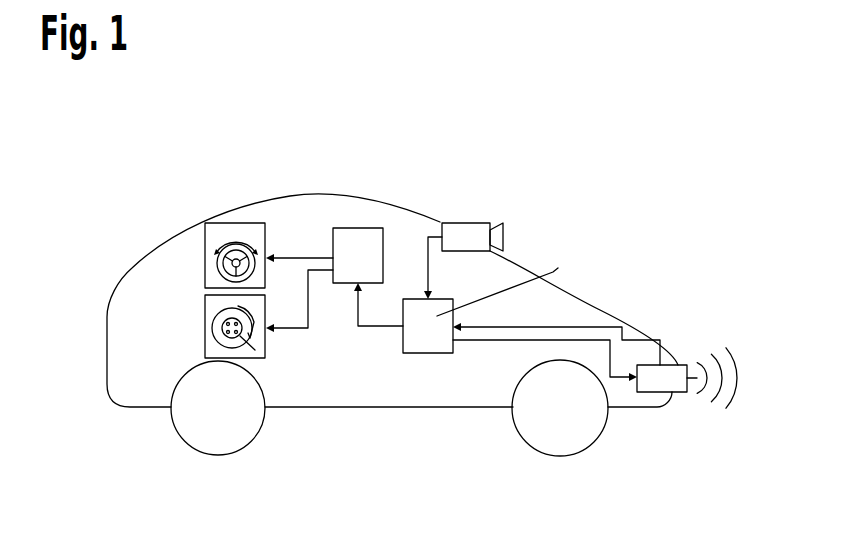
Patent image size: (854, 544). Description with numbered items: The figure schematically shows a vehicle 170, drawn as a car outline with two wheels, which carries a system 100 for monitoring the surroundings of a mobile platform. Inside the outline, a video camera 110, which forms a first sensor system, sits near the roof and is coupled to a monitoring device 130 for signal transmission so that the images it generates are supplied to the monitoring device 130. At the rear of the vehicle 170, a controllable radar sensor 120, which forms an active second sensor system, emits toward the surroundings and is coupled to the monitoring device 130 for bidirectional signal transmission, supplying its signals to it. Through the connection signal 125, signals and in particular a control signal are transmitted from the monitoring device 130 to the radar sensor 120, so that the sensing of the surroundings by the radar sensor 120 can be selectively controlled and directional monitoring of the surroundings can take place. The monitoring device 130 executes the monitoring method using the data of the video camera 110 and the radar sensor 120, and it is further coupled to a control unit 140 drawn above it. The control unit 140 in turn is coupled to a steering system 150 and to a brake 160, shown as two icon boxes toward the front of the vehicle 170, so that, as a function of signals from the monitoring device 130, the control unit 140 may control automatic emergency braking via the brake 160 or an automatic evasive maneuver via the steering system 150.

The system for monitoring surroundings 100 is at (641, 130).
The video camera 110 is at (467, 223).
The controllable radar sensor 120 is at (680, 395).
The connection signal 125 is at (613, 406).
The monitoring device 130 is at (427, 354).
The control unit 140 is at (357, 228).
The steering system 150 is at (207, 261).
The brake 160 is at (207, 327).
The vehicle 170 is at (358, 408).